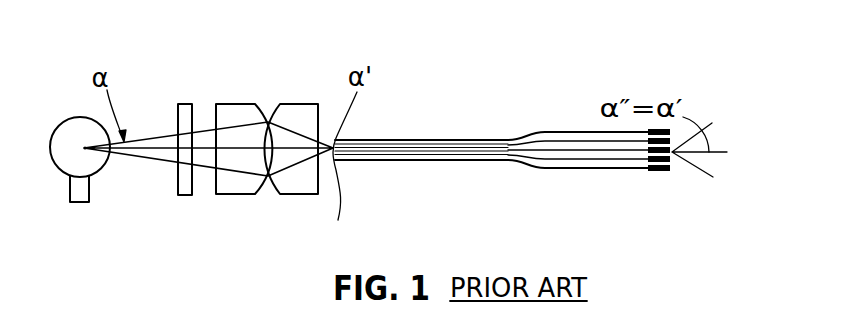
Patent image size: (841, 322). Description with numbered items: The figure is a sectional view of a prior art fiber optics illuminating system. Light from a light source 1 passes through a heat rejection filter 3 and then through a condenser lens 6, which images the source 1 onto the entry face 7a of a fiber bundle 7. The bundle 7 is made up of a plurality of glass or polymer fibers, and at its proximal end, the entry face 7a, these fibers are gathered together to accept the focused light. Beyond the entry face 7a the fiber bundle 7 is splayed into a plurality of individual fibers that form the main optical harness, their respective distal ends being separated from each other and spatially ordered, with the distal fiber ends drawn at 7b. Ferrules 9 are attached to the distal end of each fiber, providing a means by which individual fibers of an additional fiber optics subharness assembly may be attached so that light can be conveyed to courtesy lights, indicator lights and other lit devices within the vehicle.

The light source 1 is at (65, 130).
The heat rejection filter 3 is at (178, 104).
The condenser lens 6 is at (268, 106).
The fiber bundle 7 is at (428, 141).
The entry face 7a is at (338, 170).
The exit ends of fibers 7b is at (670, 174).
The ferrules 9 is at (650, 174).